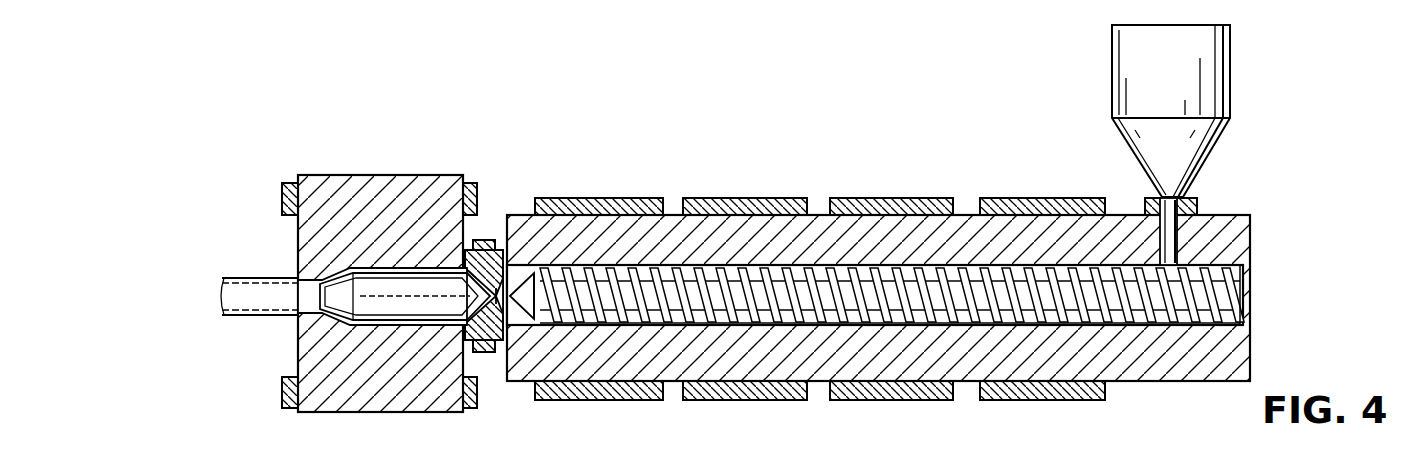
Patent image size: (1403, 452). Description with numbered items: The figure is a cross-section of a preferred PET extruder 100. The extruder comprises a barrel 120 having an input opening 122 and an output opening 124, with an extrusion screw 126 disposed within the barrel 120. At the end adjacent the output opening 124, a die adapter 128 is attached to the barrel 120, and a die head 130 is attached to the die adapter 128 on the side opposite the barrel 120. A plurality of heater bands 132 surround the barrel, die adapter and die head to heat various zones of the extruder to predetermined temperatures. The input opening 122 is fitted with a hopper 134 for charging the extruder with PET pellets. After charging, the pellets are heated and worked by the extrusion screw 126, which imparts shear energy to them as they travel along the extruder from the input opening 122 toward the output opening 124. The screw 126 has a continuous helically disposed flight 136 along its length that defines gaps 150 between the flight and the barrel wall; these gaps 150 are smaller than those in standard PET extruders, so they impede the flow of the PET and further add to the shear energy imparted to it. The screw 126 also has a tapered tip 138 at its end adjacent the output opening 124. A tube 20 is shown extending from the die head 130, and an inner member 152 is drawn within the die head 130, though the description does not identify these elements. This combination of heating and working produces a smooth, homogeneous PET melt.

The supply tube 20 is at (235, 318).
The extruder 100 is at (833, 108).
The barrel 120 is at (1262, 208).
The input opening 122 is at (1206, 214).
The output opening 124 is at (505, 295).
The extrusion screw 126 is at (866, 262).
The die adapter 128 is at (482, 240).
The die head 130 is at (407, 172).
The heater bands 132 is at (703, 197).
The hopper 134 is at (1232, 78).
The flight 136 is at (1250, 312).
The tapered tip 138 is at (527, 278).
The gaps 150 is at (898, 328).
The inner tube 152 is at (402, 300).